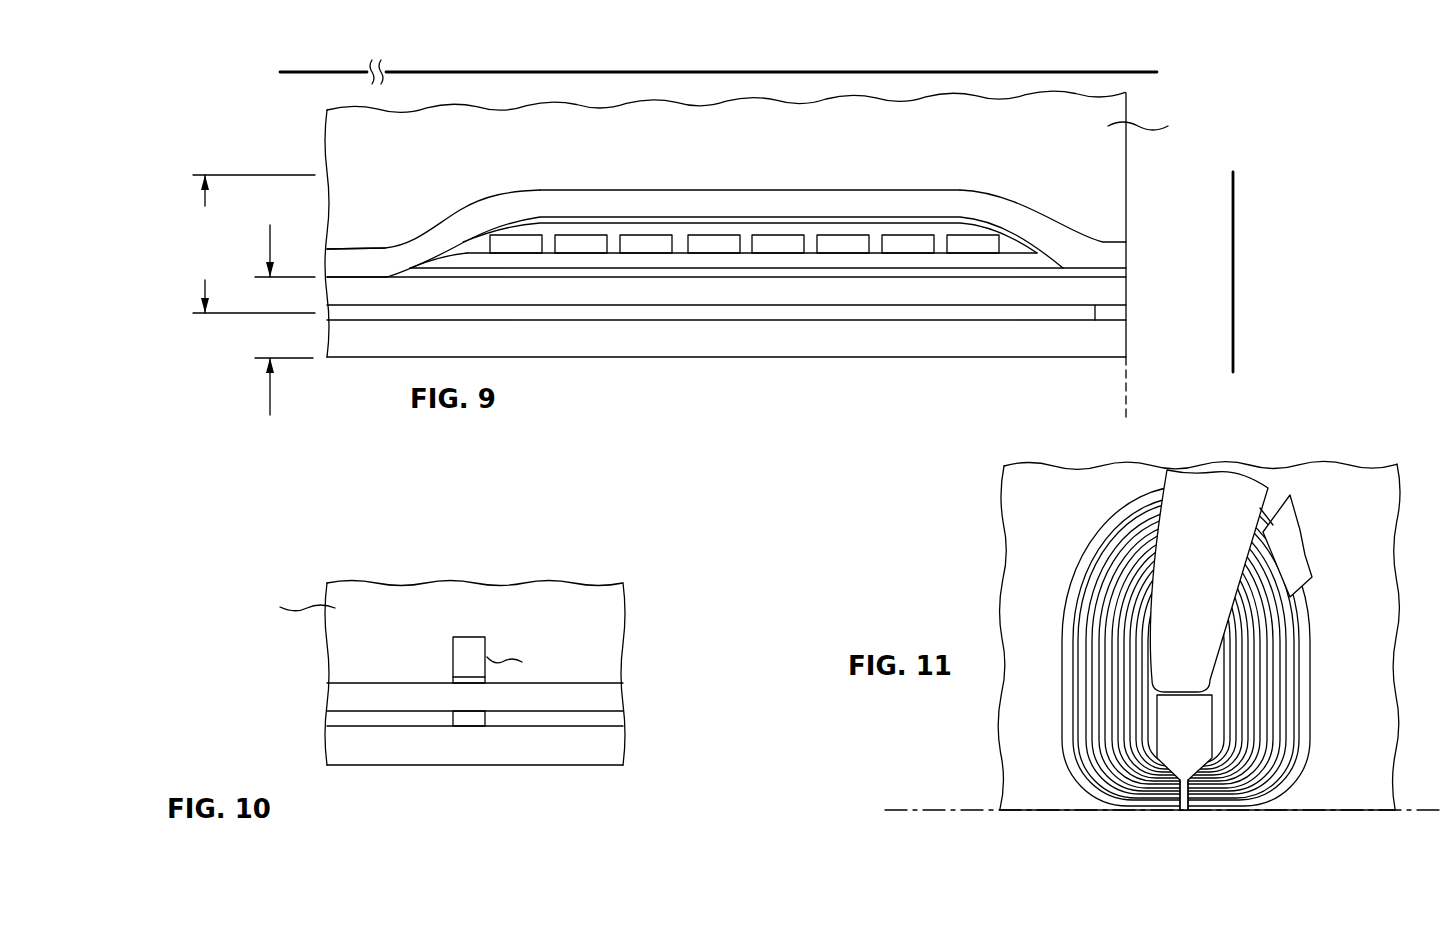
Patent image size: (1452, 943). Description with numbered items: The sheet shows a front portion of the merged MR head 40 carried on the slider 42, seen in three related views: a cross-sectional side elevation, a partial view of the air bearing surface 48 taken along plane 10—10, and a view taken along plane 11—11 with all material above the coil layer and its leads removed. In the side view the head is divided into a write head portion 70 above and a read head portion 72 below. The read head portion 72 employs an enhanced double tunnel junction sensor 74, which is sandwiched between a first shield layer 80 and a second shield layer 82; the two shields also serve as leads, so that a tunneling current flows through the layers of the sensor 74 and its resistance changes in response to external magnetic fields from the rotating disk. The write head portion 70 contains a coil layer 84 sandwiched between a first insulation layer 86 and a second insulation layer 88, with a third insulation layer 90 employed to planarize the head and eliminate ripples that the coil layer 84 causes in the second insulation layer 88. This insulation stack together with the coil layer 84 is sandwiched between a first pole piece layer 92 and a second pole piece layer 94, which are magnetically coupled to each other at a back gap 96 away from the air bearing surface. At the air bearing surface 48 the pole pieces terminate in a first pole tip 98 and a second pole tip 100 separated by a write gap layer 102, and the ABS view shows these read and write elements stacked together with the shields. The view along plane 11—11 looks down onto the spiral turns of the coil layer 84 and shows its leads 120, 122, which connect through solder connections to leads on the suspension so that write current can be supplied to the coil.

In FIG. 9, the plane 10— 10 is at (1246, 365).
In FIG. 9, the plane 11— 11 is at (1157, 60).
In FIG. 9, the merged MR head 40 is at (315, 120).
In FIG. 10, the merged MR head 40 is at (643, 597).
In FIG. 11, the merged MR head 40 is at (1321, 628).
In FIG. 9, the slider 42 is at (1152, 123).
In FIG. 10, the slider 42 is at (290, 606).
In FIG. 9, the air bearing surface (ABS) 48 is at (1128, 412).
In FIG. 11, the air bearing surface (ABS) 48 is at (940, 808).
In FIG. 9, the write head portion 70 is at (245, 244).
In FIG. 9, the read head portion 72 is at (278, 424).
In FIG. 9, the enhanced double tunnel junction sensor 74 is at (1125, 310).
In FIG. 10, the enhanced double tunnel junction sensor 74 is at (468, 728).
In FIG. 9, the first shield layer 80 is at (872, 345).
In FIG. 10, the first shield layer 80 is at (615, 748).
In FIG. 9, the second shield layer 82 is at (726, 346).
In FIG. 10, the second shield layer 82 is at (413, 697).
In FIG. 9, the first pole piece layer 92 is at (973, 290).
In FIG. 10, the first pole piece layer 92 is at (330, 700).
In FIG. 9, the coil layer 84 is at (778, 245).
In FIG. 11, the coil layer 84 is at (1282, 714).
In FIG. 9, the first insulation layer 86 is at (653, 263).
In FIG. 9, the second insulation layer 88 is at (1018, 245).
In FIG. 9, the third insulation layer 90 is at (555, 215).
In FIG. 9, the second pole piece layer 94 is at (872, 200).
In FIG. 11, the second pole piece layer 94 is at (1168, 742).
In FIG. 9, the back gap 96 is at (360, 249).
In FIG. 9, the first pole tip 98 is at (1128, 290).
In FIG. 9, the second pole tip 100 is at (1120, 252).
In FIG. 10, the second pole tip 100 is at (478, 643).
In FIG. 11, the second pole tip 100 is at (1181, 812).
In FIG. 9, the write gap layer 102 is at (1122, 270).
In FIG. 10, the write gap layer 102 is at (470, 677).
In FIG. 11, the lead 120 is at (1212, 576).
In FIG. 11, the lead 122 is at (1300, 537).